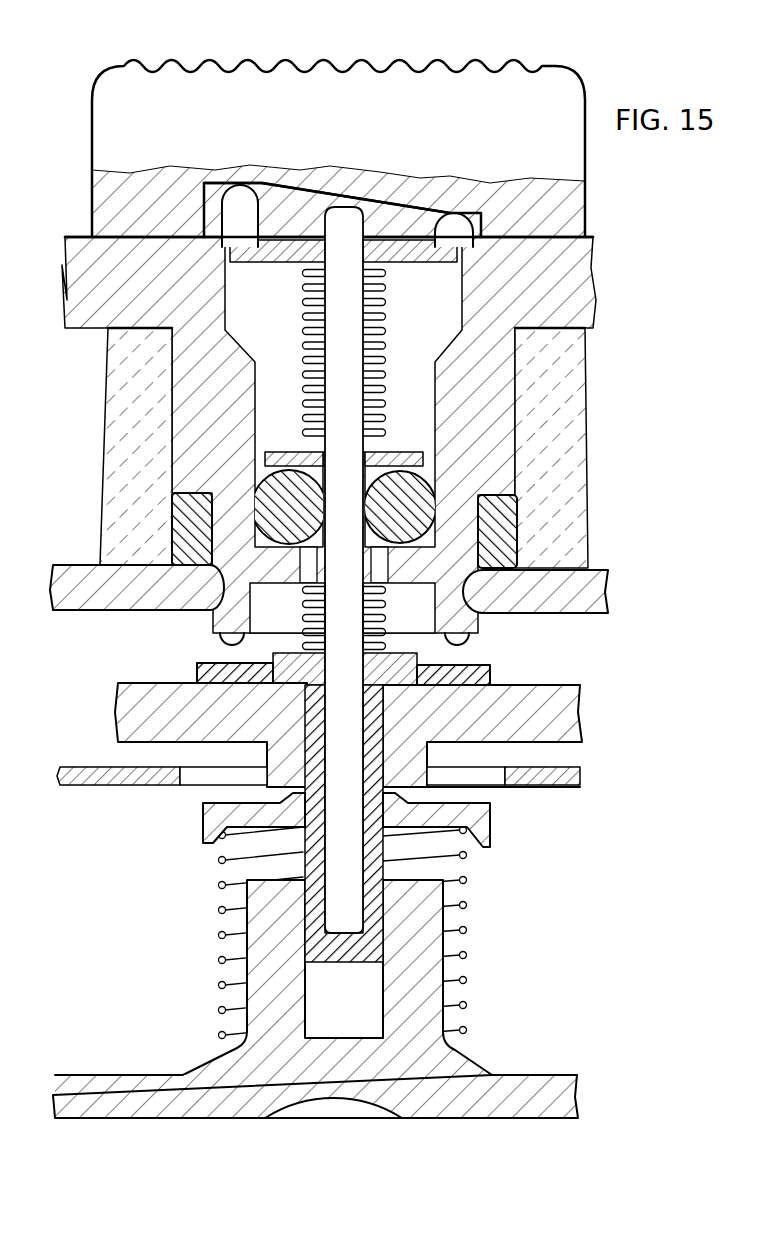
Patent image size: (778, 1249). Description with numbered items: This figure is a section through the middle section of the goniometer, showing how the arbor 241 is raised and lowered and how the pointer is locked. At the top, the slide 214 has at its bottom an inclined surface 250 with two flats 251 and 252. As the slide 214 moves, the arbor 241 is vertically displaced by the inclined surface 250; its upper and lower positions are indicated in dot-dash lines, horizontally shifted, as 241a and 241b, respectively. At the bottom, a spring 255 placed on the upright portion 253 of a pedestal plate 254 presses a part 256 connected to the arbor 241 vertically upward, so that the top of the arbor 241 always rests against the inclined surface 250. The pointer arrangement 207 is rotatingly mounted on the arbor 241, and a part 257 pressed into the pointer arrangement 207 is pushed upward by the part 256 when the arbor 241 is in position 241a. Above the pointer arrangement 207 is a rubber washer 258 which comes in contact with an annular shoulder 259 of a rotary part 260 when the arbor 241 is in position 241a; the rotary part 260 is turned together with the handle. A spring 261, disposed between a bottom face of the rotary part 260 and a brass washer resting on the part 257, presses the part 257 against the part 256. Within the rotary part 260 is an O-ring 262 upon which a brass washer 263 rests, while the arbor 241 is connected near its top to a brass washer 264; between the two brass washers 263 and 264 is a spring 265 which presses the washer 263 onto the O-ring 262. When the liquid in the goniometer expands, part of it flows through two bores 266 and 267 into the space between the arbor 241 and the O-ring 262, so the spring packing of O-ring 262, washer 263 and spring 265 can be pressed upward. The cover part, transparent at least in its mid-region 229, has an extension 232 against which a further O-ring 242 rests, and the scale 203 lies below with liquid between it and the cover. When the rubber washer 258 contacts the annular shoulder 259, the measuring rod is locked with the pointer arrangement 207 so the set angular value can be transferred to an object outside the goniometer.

The slide 214 is at (355, 83).
The inclined surface 250 is at (307, 180).
The flat 251 is at (225, 182).
The flat 252 is at (448, 213).
The upper position of arbor 241a is at (242, 247).
The lower position of arbor 241b is at (468, 247).
The arbor 241 is at (345, 280).
The brass washer 264 is at (457, 253).
The rotary part 260 is at (577, 302).
The extension 232 is at (567, 408).
The O-ring 242 is at (497, 527).
The mid-region 229 is at (583, 593).
The O-ring 262 is at (292, 495).
The brass washer 263 is at (408, 458).
The spring 265 is at (368, 353).
The bore 266 is at (300, 576).
The bore 267 is at (412, 572).
The spring 261 is at (323, 608).
The annular shoulder 259 is at (460, 642).
The rubber washer 258 is at (205, 663).
The part 257 is at (375, 718).
The pointer arrangement 207 is at (140, 716).
The scale 203 is at (98, 782).
The part 256 is at (477, 817).
The spring 255 is at (465, 885).
The upright portion 253 is at (423, 953).
The pedestal plate 254 is at (543, 1107).